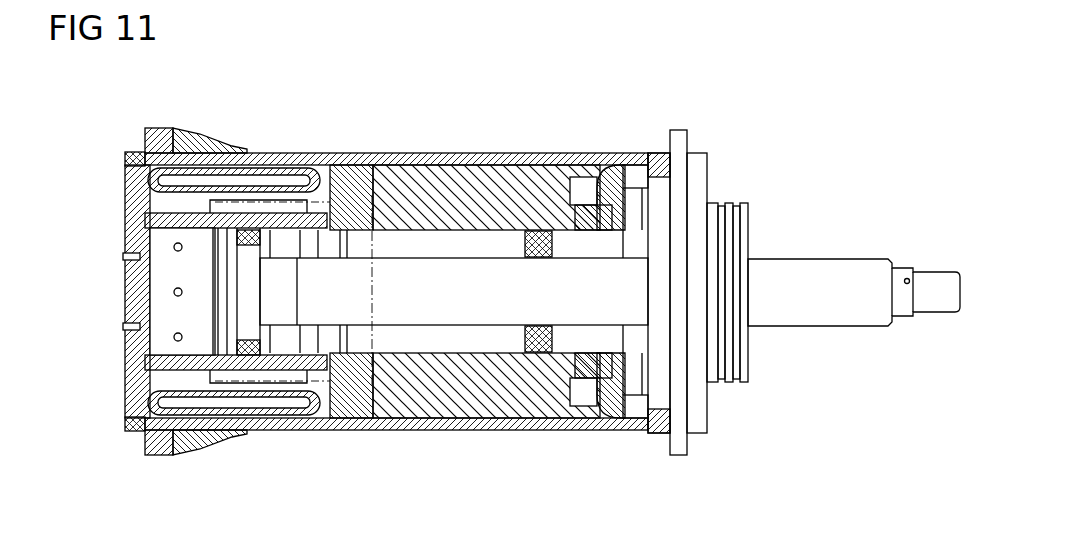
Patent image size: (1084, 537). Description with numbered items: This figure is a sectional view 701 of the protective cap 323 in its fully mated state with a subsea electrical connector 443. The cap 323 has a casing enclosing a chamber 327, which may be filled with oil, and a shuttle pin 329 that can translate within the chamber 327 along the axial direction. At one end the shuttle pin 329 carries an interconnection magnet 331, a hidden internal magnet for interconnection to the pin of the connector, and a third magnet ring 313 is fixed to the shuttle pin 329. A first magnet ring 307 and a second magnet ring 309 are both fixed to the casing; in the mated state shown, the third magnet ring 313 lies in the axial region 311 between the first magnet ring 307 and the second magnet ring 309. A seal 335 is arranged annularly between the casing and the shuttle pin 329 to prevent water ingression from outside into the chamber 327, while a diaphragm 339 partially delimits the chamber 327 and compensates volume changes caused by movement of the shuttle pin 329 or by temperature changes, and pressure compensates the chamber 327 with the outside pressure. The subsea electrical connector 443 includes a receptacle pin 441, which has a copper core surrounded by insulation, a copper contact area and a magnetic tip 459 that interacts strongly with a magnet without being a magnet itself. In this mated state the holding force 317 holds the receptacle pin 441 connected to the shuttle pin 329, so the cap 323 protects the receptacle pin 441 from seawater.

The first magnet ring 307 is at (190, 443).
The second magnet ring 309 is at (282, 400).
The axial region 311 is at (258, 152).
The third magnet ring 313 is at (215, 396).
The holding force 317 is at (90, 299).
The protective cap 323 is at (90, 237).
The chamber 327 is at (458, 240).
The shuttle pin 329 is at (334, 262).
The interconnection magnet 331 is at (345, 262).
The seal 335 is at (570, 230).
The diaphragm 339 is at (283, 170).
The receptacle pin 441 is at (505, 258).
The subsea electrical connector 443 is at (780, 216).
The magnetic tip 459 is at (357, 317).
The sectional view 701 is at (878, 152).